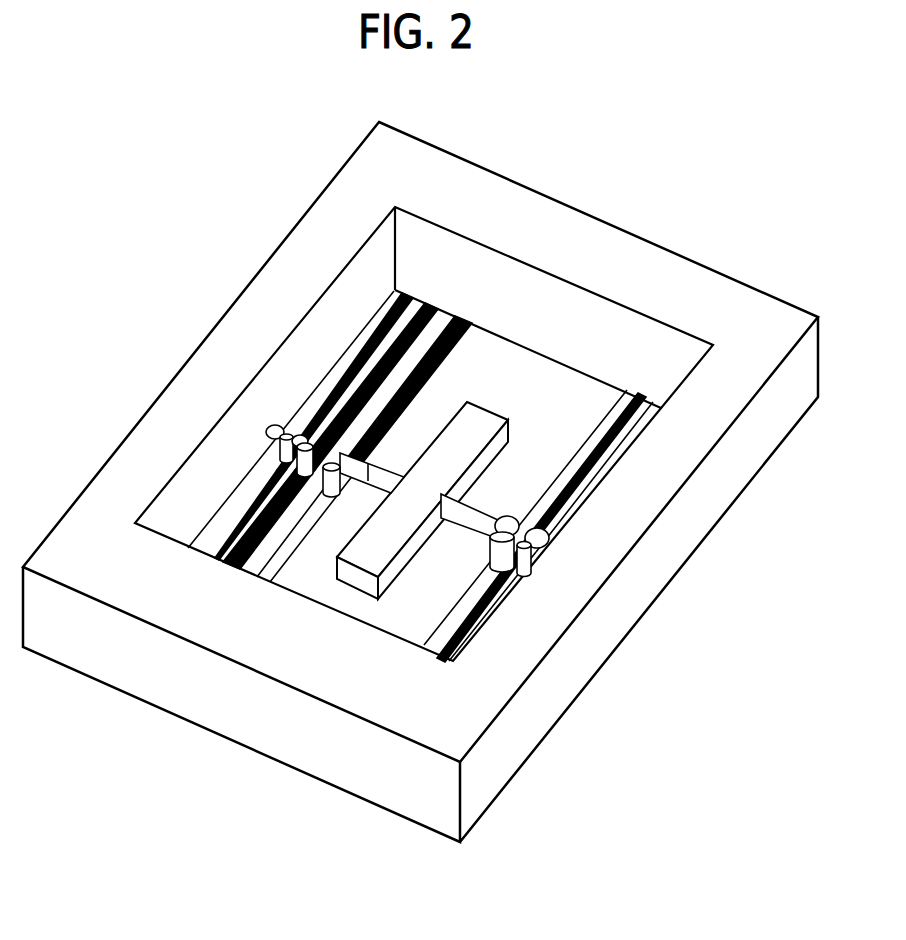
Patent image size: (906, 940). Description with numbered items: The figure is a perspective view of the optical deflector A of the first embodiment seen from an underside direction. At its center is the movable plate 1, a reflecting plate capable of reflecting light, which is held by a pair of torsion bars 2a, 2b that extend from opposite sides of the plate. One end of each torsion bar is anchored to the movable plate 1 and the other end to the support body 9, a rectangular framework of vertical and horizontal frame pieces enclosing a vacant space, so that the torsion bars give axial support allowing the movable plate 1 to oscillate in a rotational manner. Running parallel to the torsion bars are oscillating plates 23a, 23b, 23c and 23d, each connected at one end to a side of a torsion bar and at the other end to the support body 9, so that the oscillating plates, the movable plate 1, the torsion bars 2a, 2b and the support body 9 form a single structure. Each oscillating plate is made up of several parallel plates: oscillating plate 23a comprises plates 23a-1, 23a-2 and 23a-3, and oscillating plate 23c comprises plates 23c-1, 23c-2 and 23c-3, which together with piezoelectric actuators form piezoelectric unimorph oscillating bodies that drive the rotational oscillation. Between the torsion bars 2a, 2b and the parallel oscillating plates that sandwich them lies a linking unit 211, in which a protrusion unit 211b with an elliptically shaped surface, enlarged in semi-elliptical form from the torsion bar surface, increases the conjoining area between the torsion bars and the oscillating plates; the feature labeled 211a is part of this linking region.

The optical deflector A is at (671, 131).
The support body 9 is at (660, 232).
The movable plate 1 is at (482, 412).
The torsion bar 2a is at (370, 468).
The torsion bar 2b is at (483, 511).
The linking unit 211 is at (313, 491).
The connecting portion part 211a is at (140, 349).
The protrusion unit 211b is at (203, 298).
The oscillating plate 23a is at (222, 517).
The oscillating plate 23a-1 is at (260, 567).
The oscillating plate 23a-2 is at (233, 553).
The oscillating plate 23a-3 is at (213, 547).
The oscillating plate 23b is at (437, 610).
The oscillating plate 23c is at (394, 306).
The oscillating plate 23c-1 is at (455, 318).
The oscillating plate 23c-2 is at (430, 306).
The oscillating plate 23c-3 is at (406, 294).
The oscillating plate 23d is at (601, 411).